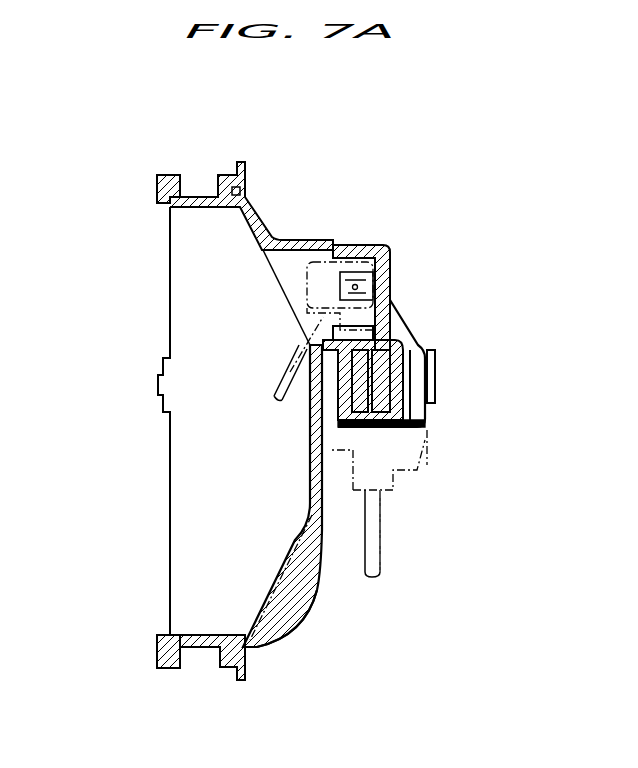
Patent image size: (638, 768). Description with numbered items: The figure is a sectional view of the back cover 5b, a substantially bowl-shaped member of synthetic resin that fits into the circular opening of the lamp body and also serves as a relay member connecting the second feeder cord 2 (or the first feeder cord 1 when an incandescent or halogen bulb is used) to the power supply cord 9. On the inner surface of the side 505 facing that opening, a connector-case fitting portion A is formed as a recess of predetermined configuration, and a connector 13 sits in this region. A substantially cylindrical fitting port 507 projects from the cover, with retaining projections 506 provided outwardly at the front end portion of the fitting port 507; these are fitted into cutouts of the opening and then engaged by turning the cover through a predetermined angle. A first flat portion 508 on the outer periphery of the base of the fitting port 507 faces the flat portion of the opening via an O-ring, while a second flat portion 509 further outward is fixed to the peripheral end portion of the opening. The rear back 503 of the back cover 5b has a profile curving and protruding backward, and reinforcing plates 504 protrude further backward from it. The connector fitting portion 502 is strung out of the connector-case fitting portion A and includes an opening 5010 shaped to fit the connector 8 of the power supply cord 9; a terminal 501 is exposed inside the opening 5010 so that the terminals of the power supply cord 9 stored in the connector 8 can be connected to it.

The side 505 is at (196, 342).
The retaining projection 506 is at (166, 175).
The fitting port 507 is at (205, 196).
The first flat portion 508 is at (238, 163).
The second flat portion 509 is at (247, 162).
The rear back 503 is at (340, 595).
The reinforcing plate 504 is at (300, 623).
The connector fitting portion 502 is at (408, 332).
The back cover 5b is at (408, 228).
The connector 13 is at (322, 268).
The connector-case fitting portion A is at (300, 272).
The terminal 501 is at (373, 287).
The opening 5010 is at (393, 428).
The connector 8 is at (417, 452).
The power supply cord 9 is at (378, 540).
The second feeder cord 2 is at (253, 360).
The first feeder cord 1 is at (288, 370).